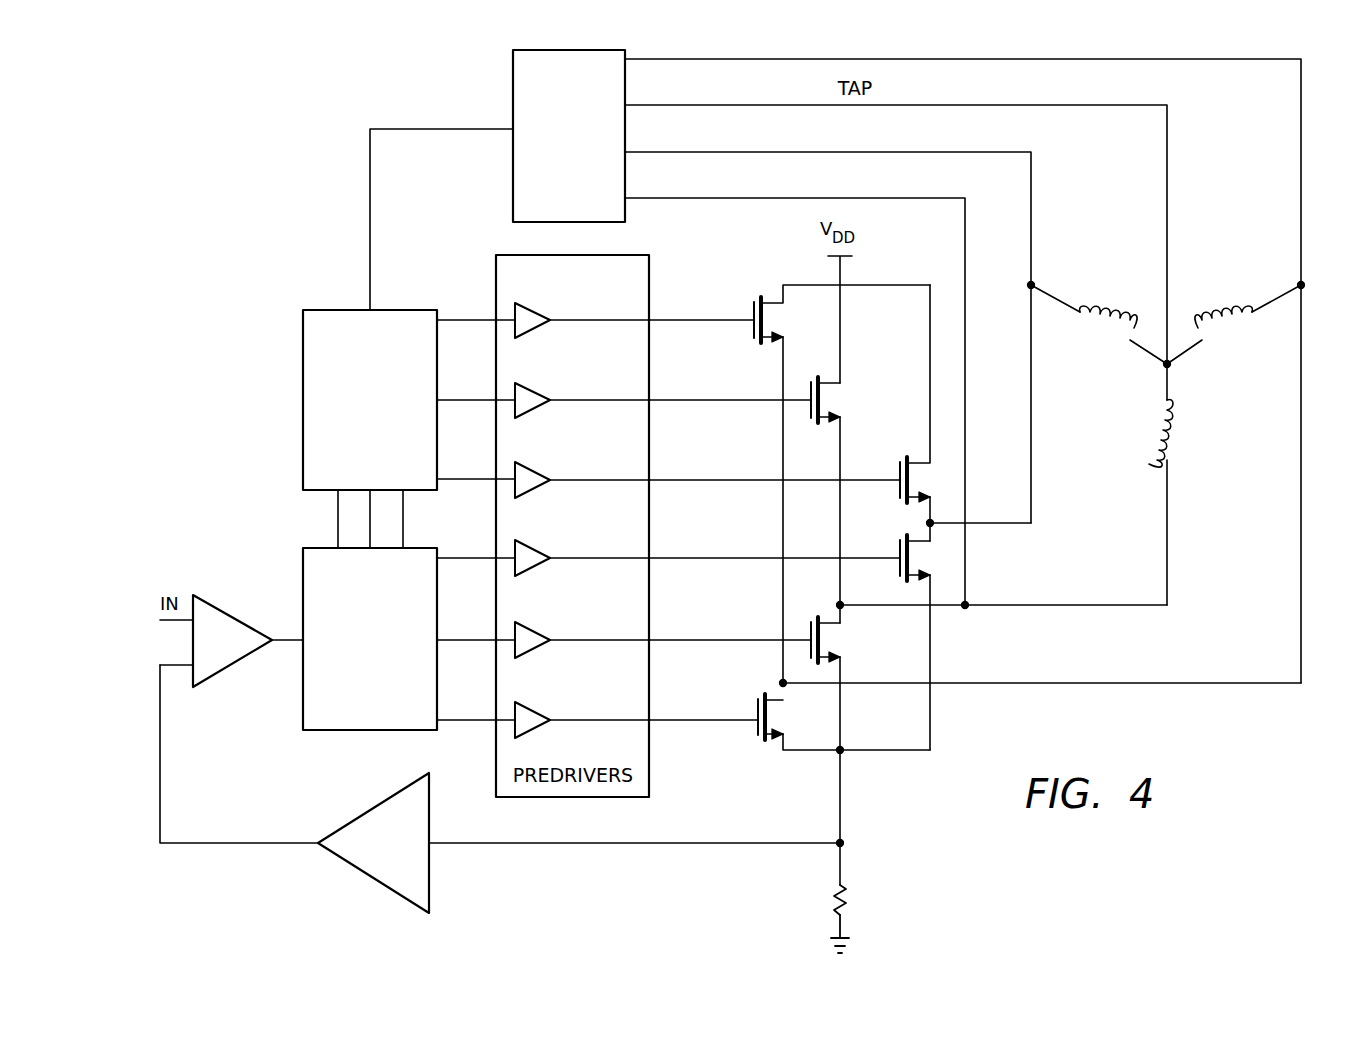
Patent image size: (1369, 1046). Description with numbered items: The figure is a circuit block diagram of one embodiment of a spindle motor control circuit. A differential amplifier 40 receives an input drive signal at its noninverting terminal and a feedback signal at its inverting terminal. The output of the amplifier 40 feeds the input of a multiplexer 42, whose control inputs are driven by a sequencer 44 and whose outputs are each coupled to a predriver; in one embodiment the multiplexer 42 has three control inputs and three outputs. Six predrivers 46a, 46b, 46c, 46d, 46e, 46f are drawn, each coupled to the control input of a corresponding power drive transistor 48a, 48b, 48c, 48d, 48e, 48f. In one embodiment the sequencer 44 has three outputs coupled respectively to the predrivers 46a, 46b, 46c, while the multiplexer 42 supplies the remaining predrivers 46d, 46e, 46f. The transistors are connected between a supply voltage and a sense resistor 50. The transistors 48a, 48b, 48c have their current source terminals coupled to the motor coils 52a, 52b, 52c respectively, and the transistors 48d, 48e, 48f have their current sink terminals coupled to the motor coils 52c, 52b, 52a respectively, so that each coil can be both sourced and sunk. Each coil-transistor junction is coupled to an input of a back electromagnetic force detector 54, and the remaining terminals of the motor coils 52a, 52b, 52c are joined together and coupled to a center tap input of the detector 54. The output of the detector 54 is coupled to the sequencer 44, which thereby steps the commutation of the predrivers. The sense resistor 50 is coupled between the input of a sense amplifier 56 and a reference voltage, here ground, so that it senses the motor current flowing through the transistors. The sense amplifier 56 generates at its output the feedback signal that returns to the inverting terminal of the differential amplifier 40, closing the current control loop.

The differential amplifier 40 is at (230, 617).
The multiplexer 42 is at (303, 688).
The sequencer 44 is at (303, 398).
The predriver 46a is at (558, 297).
The predriver 46b is at (558, 377).
The predriver 46c is at (558, 457).
The predriver 46d is at (558, 535).
The predriver 46e is at (558, 617).
The predriver 46f is at (558, 697).
The power drive transistor 48a is at (754, 310).
The power drive transistor 48b is at (810, 386).
The power drive transistor 48c is at (902, 464).
The power drive transistor 48d is at (892, 542).
The power drive transistor 48e is at (810, 618).
The power drive transistor 48f is at (754, 734).
The sense resistor 50 is at (850, 898).
The motor coil 52a is at (1244, 334).
The motor coil 52b is at (1180, 447).
The motor coil 52c is at (1088, 334).
The back electromagnetic force (BEMF) detector 54 is at (513, 98).
The sense amplifier 56 is at (374, 879).